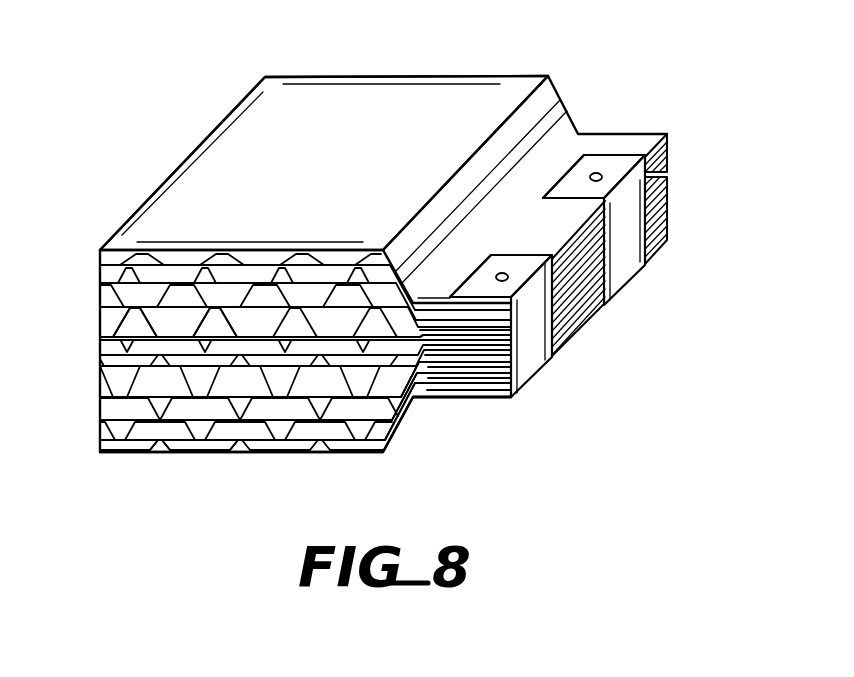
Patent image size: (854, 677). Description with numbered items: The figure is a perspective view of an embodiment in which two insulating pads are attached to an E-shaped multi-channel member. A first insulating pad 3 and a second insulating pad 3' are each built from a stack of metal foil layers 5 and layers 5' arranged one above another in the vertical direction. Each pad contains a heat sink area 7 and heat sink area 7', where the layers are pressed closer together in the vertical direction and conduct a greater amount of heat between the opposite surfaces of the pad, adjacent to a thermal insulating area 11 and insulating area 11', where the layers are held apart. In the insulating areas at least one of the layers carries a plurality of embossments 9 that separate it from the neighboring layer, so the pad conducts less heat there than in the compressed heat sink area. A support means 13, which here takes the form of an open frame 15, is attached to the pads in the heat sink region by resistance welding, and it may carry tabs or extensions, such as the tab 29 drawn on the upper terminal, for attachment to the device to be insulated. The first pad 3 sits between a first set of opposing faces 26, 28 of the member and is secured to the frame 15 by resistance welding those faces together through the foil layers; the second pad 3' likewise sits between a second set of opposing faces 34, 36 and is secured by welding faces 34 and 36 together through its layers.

The insulating pad 3 is at (383, 164).
The second insulating pad 3' is at (305, 451).
The layers of metal foil 5 is at (277, 293).
The layers of metal foil of second pad 5' is at (277, 396).
The heat sink area 7 is at (681, 153).
The heat sink area of second pad 7' is at (684, 220).
The embossments 9 is at (165, 290).
The thermal insulating area 11 is at (324, 137).
The thermal insulating area of second pad 11' is at (279, 444).
The support means 13 is at (656, 276).
The open frame 15 is at (540, 325).
The first opposing face 26 is at (487, 330).
The first opposing face 28 is at (512, 332).
The terminal mounting hole tab 29 is at (596, 172).
The second opposing face 34 is at (440, 398).
The second opposing face 36 is at (487, 400).